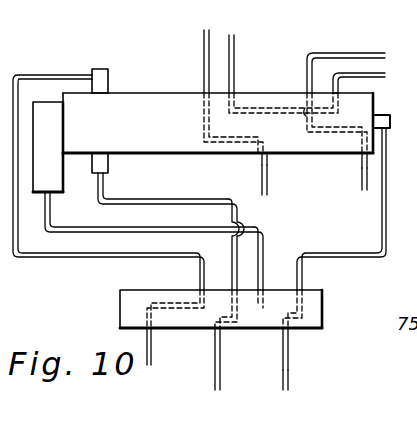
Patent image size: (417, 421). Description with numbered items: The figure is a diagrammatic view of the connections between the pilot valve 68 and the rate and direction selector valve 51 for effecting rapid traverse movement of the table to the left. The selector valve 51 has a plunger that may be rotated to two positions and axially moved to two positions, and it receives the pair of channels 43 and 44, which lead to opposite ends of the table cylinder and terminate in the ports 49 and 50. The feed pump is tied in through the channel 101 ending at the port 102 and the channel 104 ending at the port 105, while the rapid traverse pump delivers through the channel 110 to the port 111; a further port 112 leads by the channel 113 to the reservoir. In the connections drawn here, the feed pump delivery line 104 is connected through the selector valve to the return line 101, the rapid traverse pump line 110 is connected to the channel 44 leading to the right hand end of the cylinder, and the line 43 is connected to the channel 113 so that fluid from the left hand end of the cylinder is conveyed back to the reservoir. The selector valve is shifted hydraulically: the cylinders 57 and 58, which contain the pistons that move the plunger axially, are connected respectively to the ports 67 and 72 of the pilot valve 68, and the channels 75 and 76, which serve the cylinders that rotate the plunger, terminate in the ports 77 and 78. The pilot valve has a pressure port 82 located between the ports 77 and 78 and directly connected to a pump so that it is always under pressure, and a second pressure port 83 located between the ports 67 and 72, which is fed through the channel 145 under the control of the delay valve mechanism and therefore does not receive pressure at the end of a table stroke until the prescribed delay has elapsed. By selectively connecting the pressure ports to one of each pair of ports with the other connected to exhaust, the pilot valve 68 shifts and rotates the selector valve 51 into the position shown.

The channel 43 is at (203, 52).
The channel 44 is at (234, 43).
The port 49 is at (204, 92).
The port 50 is at (234, 93).
The rate and direction selector valve 51 is at (176, 150).
The cylinder 57 is at (52, 193).
The cylinder 58 is at (384, 115).
The port 67 is at (262, 290).
The pilot valve 68 is at (308, 320).
The port 72 is at (302, 292).
The channel 75 is at (188, 186).
The channel 76 is at (90, 260).
The port 77 is at (233, 290).
The port 78 is at (200, 290).
The pressure port 82 is at (209, 342).
The second pressure port 83 is at (282, 333).
The channel 101 is at (363, 34).
The port 102 is at (307, 92).
The channel 104 is at (360, 181).
The port 105 is at (364, 156).
The channel 110 is at (378, 60).
The port 111 is at (340, 91).
The port 112 is at (266, 155).
The channel 113 is at (267, 188).
The channel 145 is at (289, 372).